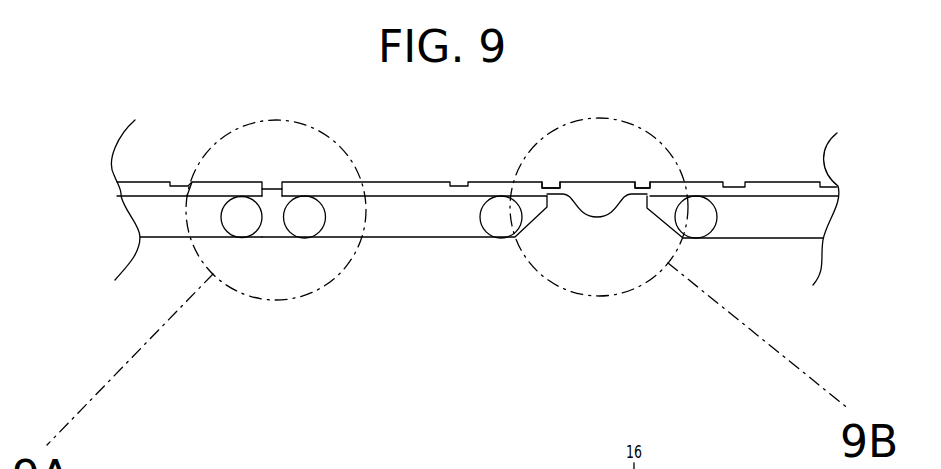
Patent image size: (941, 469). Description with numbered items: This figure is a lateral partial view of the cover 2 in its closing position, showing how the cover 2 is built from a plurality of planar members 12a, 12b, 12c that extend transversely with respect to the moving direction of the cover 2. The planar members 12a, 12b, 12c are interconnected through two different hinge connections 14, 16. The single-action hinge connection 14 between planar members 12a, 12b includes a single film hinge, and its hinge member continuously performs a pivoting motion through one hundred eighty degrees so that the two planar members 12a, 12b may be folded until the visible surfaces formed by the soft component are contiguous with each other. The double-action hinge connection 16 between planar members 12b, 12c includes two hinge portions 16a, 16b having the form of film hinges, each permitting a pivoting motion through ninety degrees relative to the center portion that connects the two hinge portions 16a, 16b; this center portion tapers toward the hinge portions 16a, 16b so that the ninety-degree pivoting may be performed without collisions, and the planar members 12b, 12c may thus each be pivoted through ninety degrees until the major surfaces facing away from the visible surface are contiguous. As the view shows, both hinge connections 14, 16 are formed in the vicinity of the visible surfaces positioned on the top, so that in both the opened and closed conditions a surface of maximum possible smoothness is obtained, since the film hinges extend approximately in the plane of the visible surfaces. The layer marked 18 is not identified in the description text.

The cover 2 is at (858, 163).
The planar member 12a is at (158, 222).
The planar member 12b is at (430, 217).
The planar member 12c is at (750, 222).
The single-action hinge connection 14 is at (273, 180).
The double-action hinge connection 16 is at (599, 198).
The hinge portion 16a is at (552, 181).
The hinge portion 16b is at (647, 182).
The cover layer 18 is at (772, 192).